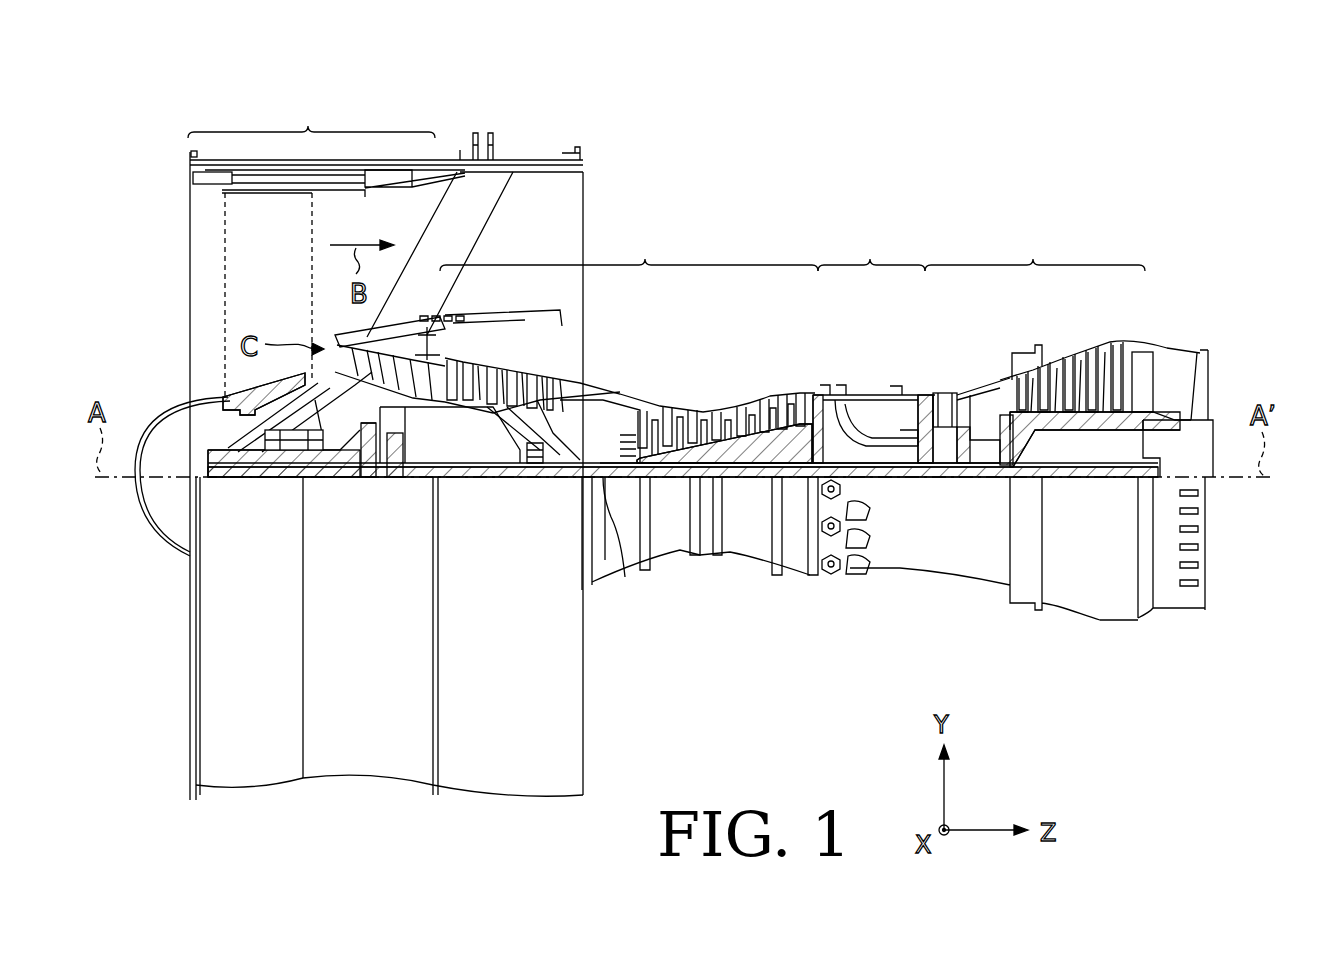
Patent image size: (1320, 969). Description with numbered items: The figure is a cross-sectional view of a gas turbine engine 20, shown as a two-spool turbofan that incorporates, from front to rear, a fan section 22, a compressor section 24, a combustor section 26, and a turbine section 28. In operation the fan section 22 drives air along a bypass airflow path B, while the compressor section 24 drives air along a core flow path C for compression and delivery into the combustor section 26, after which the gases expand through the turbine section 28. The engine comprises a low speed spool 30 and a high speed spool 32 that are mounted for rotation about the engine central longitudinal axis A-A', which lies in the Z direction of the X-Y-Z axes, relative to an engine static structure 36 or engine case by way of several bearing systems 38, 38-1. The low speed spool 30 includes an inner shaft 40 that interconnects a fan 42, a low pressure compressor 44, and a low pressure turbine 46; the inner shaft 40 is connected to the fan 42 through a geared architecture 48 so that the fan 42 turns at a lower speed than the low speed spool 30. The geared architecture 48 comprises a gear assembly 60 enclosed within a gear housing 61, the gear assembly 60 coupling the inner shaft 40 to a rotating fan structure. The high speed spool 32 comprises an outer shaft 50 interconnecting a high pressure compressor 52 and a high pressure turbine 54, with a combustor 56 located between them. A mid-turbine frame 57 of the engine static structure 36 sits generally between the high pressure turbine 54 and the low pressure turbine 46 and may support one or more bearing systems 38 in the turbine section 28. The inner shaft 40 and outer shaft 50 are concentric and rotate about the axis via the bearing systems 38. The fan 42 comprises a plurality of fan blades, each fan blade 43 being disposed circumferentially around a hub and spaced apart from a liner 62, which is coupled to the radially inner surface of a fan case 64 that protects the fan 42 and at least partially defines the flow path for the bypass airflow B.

The gas turbine engine 20 is at (929, 190).
The fan section 22 is at (311, 113).
The compressor section 24 is at (629, 251).
The combustor section 26 is at (871, 251).
The turbine section 28 is at (1035, 251).
The low speed spool 30 is at (750, 495).
The high speed spool 32 is at (790, 444).
The engine static structure 36 is at (182, 785).
The bearing system 38 is at (993, 477).
The bearing system 38-1 is at (280, 452).
The inner shaft 40 is at (604, 478).
The fan 42 is at (205, 269).
The fan blade 43 is at (289, 293).
The low pressure compressor 44 is at (512, 376).
The low pressure turbine 46 is at (1074, 364).
The geared architecture 48 is at (396, 495).
The outer shaft 50 is at (866, 473).
The high pressure compressor 52 is at (735, 444).
The high pressure turbine 54 is at (946, 391).
The combustor 56 is at (864, 416).
The mid-turbine frame 57 is at (989, 468).
The gear assembly 60 is at (402, 455).
The gear housing 61 is at (395, 427).
The liner 62 is at (240, 185).
The fan case 64 is at (190, 168).